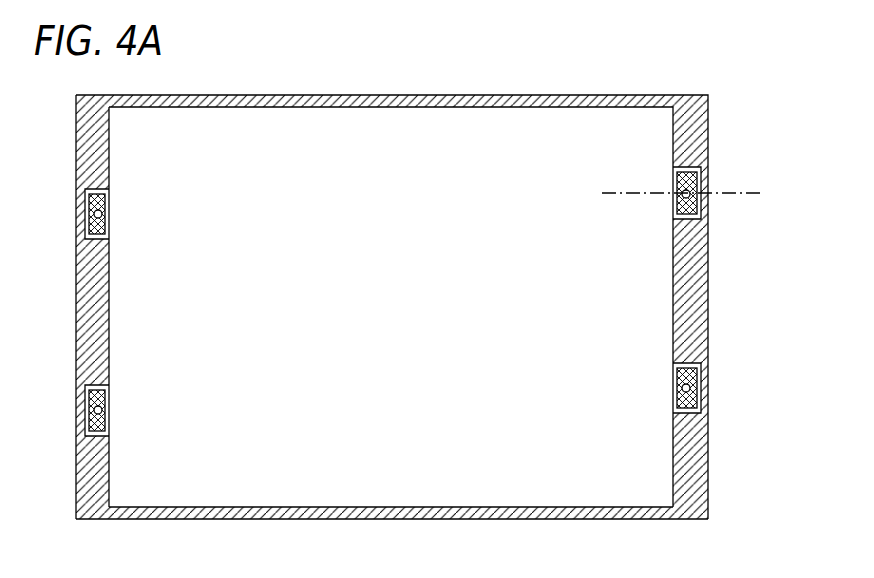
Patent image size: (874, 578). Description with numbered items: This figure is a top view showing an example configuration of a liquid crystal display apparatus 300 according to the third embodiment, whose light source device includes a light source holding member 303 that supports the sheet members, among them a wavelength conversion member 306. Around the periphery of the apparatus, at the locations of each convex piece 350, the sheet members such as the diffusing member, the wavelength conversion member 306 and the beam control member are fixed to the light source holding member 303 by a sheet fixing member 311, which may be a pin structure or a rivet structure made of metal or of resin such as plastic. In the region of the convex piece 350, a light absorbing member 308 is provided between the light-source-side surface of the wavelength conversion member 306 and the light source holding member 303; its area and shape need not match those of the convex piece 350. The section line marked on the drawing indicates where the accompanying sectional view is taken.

The liquid crystal display apparatus 300 is at (75, 522).
The light source holding member 303 is at (88, 447).
The wavelength conversion member 306 is at (238, 504).
The light absorbing member 308 is at (89, 236).
The convex piece 350 is at (95, 200).
The sheet fixing member 311 is at (687, 385).